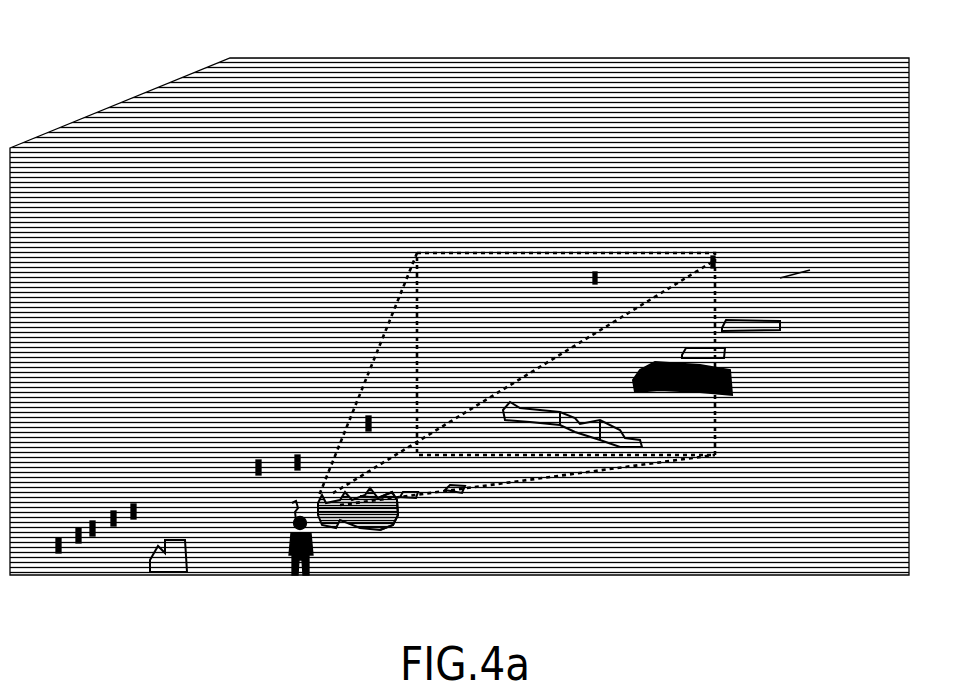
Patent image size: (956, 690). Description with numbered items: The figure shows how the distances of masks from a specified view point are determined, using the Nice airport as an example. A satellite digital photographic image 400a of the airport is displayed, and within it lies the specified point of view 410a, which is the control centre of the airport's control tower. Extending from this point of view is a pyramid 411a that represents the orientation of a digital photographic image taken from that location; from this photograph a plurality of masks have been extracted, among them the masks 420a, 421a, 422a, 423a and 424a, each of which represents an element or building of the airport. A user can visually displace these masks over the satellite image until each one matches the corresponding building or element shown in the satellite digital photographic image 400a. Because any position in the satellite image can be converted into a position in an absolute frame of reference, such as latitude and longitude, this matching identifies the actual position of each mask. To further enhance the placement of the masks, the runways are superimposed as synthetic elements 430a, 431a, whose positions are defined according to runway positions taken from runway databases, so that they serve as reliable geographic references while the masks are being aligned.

The satellite digital photographic image 400a is at (90, 572).
The specified point of view 410a is at (302, 553).
The pyramid 411a is at (527, 480).
The mask 420a is at (355, 527).
The mask 421a is at (400, 527).
The mask 422a is at (636, 442).
The mask 423a is at (730, 393).
The mask 424a is at (295, 517).
The synthetic element 430a is at (795, 273).
The synthetic element 431a is at (168, 480).